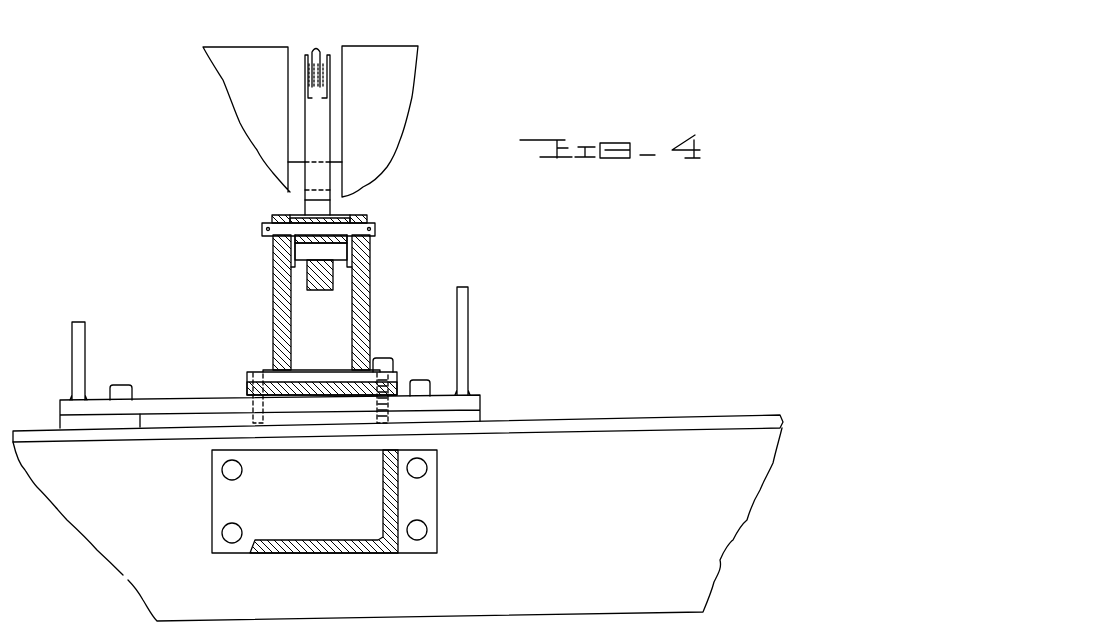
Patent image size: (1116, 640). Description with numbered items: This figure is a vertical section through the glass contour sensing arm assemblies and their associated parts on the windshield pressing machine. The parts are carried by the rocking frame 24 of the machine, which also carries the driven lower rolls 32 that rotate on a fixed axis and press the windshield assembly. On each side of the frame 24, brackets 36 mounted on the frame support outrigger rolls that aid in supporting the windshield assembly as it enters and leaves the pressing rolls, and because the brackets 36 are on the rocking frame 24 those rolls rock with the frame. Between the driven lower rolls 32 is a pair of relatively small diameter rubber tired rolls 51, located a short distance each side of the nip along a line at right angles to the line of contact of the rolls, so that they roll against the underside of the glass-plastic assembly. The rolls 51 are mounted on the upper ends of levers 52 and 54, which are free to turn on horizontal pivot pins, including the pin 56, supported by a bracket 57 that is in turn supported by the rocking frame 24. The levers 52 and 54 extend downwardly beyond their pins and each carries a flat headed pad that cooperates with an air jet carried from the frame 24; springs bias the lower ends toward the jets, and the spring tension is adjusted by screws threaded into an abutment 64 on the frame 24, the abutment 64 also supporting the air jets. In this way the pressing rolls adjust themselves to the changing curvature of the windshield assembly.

The frame 24 is at (590, 528).
The driven lower rolls 32 is at (268, 89).
The brackets 36 is at (465, 367).
The rubber tired rolls 51 is at (317, 53).
The lever 52 is at (317, 282).
The lever 54 is at (325, 153).
The horizontal pivot pin 56 is at (375, 228).
The bracket 57 is at (368, 320).
The abutment 64 is at (347, 545).